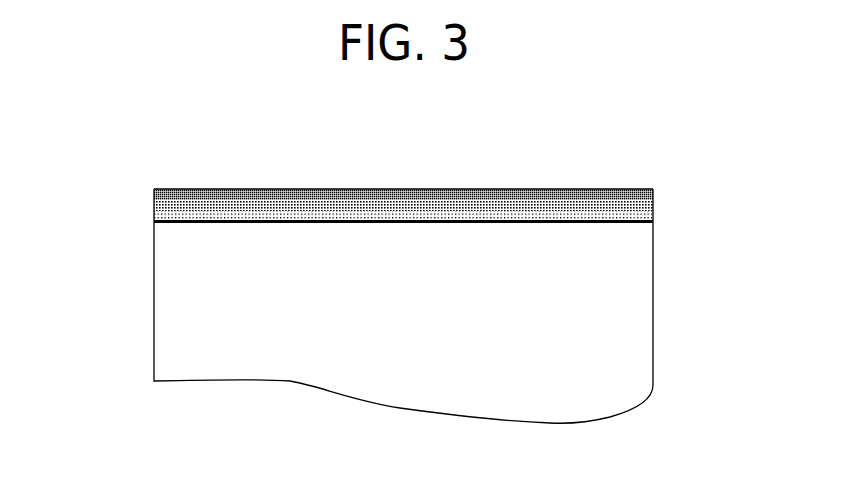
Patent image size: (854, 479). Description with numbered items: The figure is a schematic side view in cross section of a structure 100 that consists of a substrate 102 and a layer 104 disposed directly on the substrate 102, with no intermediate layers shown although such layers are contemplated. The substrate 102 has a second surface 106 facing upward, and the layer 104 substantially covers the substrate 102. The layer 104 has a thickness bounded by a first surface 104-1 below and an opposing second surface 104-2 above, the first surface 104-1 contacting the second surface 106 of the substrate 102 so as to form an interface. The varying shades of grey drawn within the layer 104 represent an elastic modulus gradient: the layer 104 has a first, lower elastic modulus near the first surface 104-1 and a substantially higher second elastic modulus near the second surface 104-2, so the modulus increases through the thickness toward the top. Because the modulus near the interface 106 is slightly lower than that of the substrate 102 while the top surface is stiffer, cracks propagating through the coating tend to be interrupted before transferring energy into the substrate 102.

The structure 100 is at (427, 129).
The substrate 102 is at (642, 330).
The layer 104 is at (653, 203).
The first surface of the layer 104-1 is at (230, 222).
The second surface of the layer 104-2 is at (228, 190).
The second surface of the substrate 106 is at (403, 223).